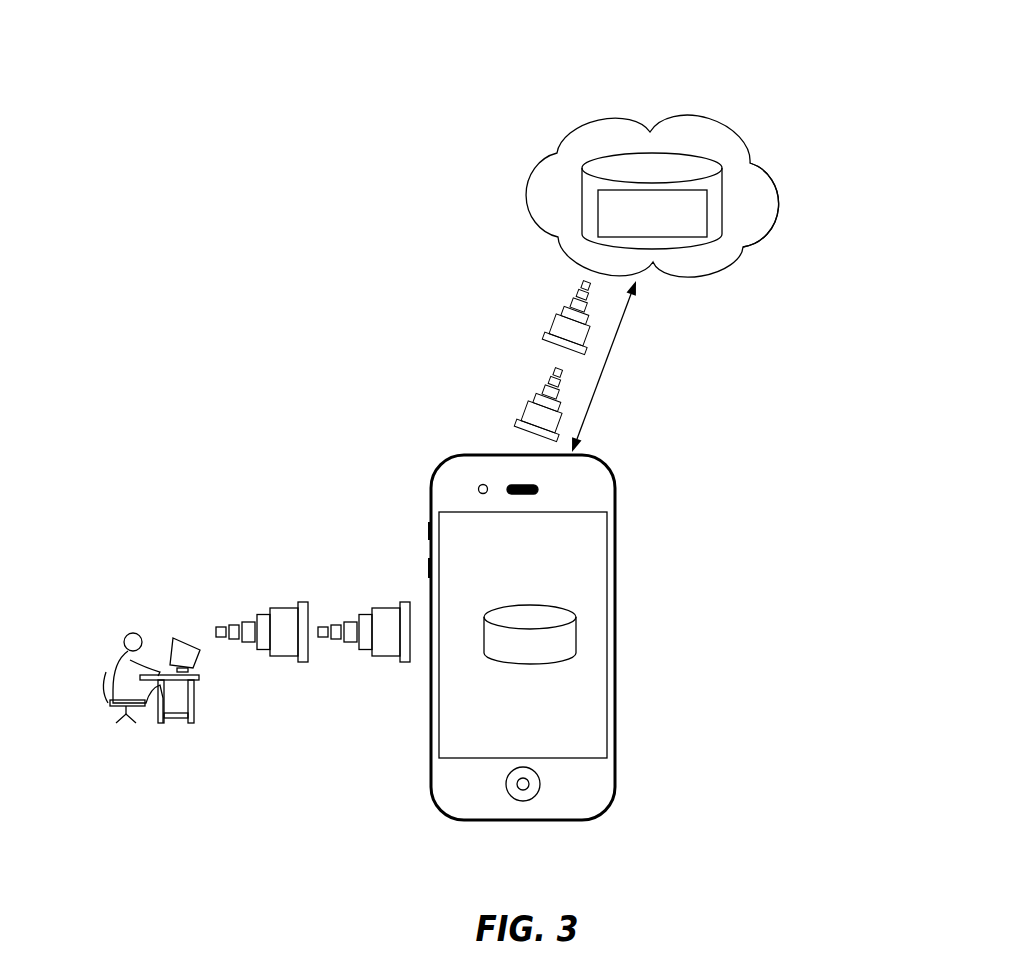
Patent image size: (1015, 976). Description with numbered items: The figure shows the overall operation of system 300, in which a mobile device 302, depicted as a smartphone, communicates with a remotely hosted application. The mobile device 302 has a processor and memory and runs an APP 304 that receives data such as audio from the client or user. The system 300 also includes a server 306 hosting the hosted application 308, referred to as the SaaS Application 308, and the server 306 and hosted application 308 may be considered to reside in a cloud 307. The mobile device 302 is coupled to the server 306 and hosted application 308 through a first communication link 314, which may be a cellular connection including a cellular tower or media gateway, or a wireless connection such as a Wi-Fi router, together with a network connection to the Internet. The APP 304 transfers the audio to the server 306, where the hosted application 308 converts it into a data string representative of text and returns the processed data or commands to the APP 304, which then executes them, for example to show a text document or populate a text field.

The system 300 is at (908, 81).
The mobile device 302 is at (440, 800).
The APP 304 is at (568, 633).
The server 306 is at (687, 163).
The cloud 307 is at (610, 122).
The hosted application 308 is at (760, 172).
The first communication link 314 is at (530, 407).